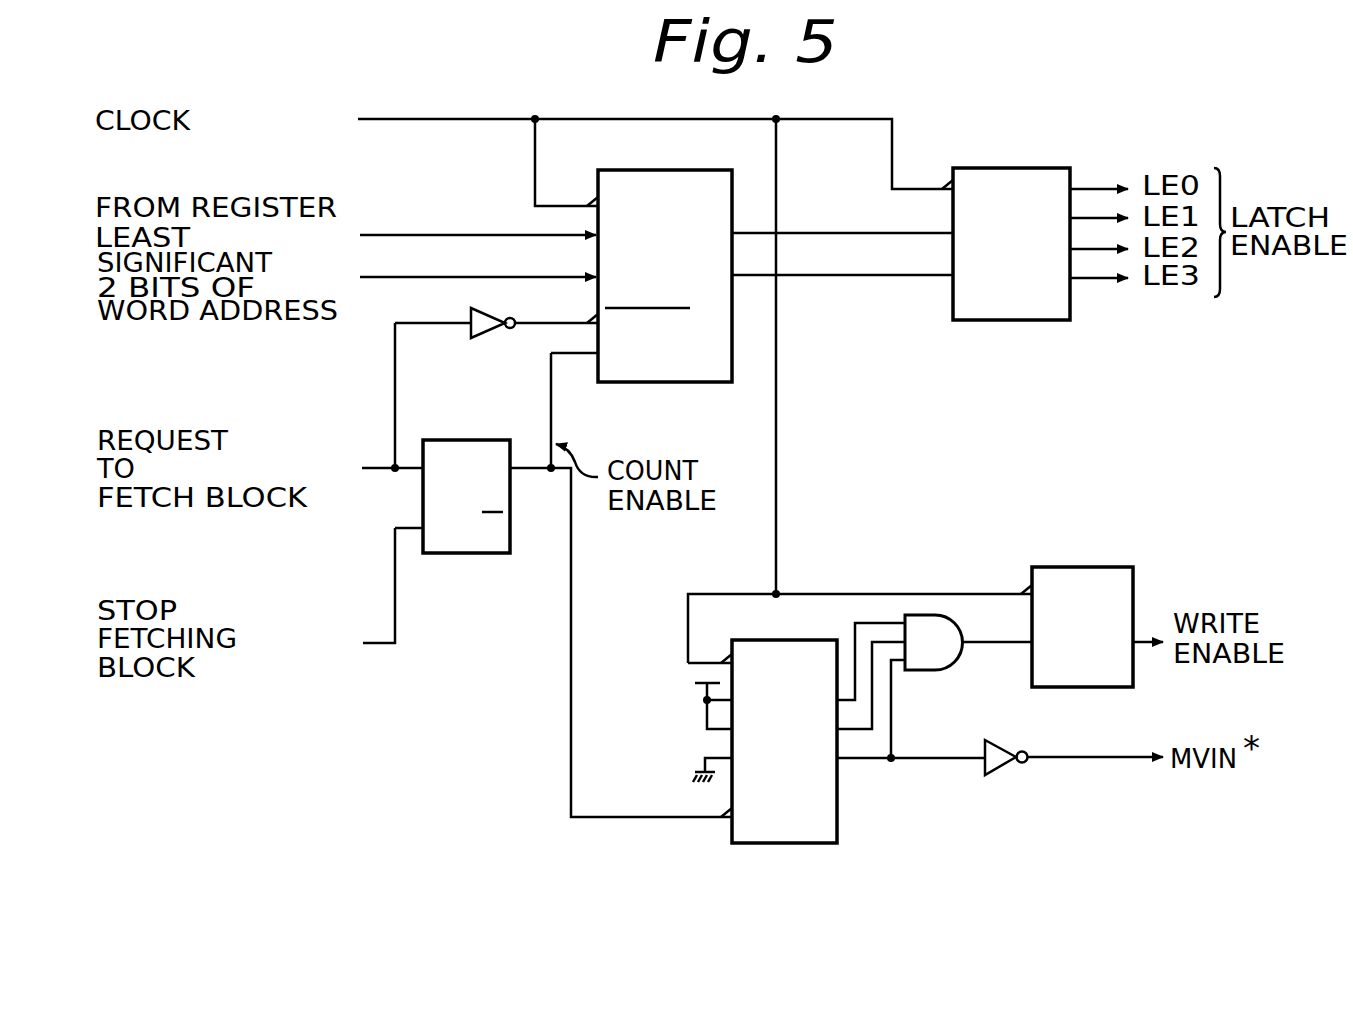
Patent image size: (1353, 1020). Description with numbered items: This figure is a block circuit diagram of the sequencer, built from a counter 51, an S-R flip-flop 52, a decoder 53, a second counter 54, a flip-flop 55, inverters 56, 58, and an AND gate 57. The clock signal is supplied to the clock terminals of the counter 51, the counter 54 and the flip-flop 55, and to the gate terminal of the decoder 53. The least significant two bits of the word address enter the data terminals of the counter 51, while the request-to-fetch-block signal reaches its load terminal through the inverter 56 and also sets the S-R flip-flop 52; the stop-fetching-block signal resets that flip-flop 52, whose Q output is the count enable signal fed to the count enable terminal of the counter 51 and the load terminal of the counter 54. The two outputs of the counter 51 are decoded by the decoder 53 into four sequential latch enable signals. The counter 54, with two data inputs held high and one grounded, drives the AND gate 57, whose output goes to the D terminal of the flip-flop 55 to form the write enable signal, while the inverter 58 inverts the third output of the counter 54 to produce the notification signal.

The counter 51 is at (612, 170).
The S-R flip-flop 52 is at (449, 440).
The decoder 53 is at (1000, 168).
The counter 54 is at (839, 814).
The flip-flop 55 is at (1070, 567).
The inverter 56 is at (480, 312).
The AND gate 57 is at (925, 672).
The inverter 58 is at (1002, 772).